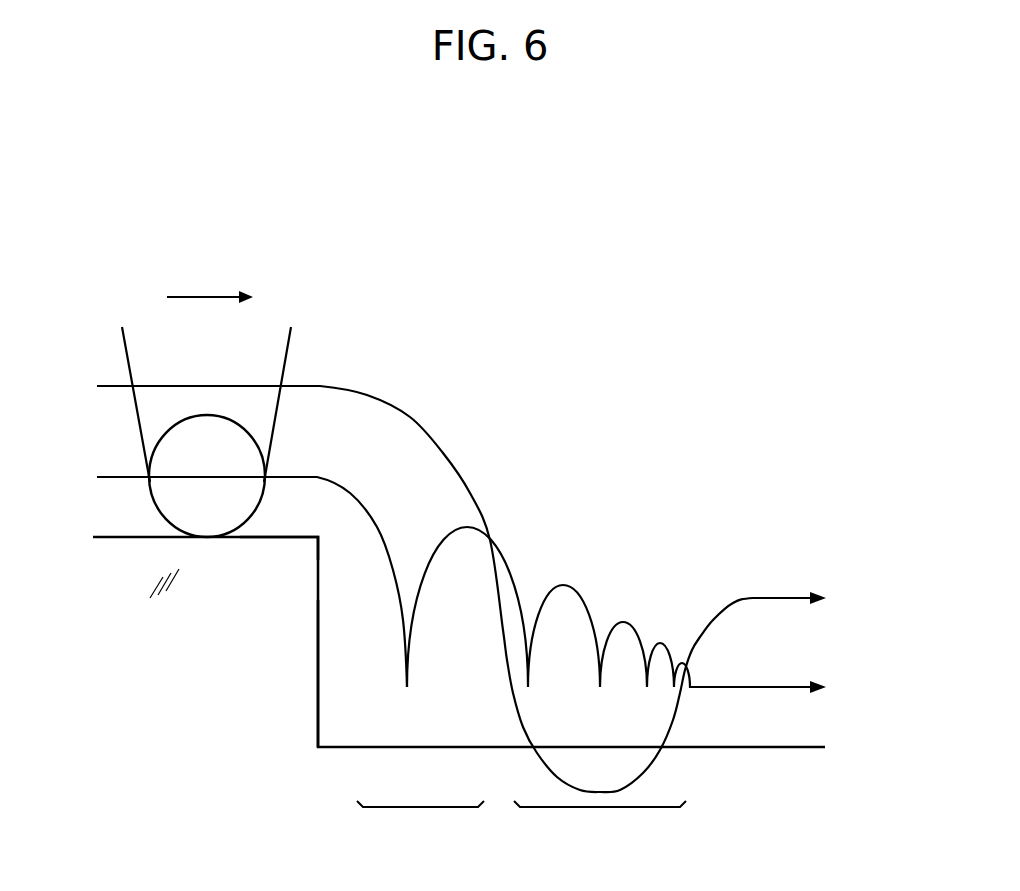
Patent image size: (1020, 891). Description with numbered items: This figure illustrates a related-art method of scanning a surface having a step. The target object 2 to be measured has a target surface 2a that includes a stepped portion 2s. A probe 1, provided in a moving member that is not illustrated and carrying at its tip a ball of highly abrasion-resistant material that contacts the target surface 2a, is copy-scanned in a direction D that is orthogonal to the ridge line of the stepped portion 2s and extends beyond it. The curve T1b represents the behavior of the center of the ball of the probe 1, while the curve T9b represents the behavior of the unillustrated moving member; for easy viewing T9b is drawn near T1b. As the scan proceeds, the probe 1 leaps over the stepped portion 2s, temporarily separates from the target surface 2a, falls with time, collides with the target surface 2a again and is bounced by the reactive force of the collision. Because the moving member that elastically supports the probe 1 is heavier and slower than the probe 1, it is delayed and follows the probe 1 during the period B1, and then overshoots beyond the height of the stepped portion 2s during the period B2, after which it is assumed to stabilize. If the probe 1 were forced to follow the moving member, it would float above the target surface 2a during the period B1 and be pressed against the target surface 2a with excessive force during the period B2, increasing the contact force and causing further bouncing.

The probe 1 is at (173, 450).
The target object 2 is at (140, 598).
The target surface 2a is at (278, 537).
The stepped portion 2s is at (318, 690).
The direction D is at (210, 284).
The behavior of the moving member T9b is at (835, 595).
The behavior of the center of the ball of the probe T1b is at (835, 687).
The period B1 is at (420, 822).
The period B2 is at (600, 822).